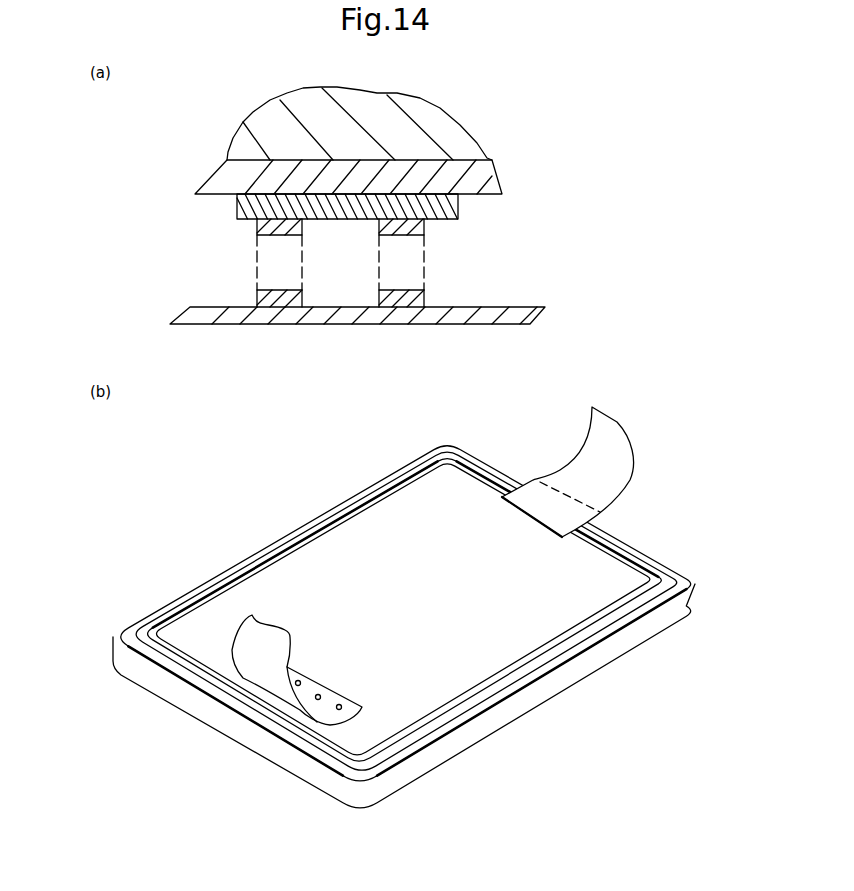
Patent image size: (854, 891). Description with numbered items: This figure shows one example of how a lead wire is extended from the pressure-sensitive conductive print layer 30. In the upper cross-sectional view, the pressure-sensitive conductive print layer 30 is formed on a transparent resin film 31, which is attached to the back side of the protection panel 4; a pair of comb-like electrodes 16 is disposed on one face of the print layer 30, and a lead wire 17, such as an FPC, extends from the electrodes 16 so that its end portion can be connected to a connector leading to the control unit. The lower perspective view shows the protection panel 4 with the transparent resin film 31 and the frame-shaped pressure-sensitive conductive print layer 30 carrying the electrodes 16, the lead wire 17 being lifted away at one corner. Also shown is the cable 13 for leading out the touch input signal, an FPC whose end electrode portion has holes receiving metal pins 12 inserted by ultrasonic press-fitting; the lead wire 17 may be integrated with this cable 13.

The protection panel 4 is at (268, 128).
The transparent resin film 31 is at (482, 182).
The pressure-sensitive conductive print layer 30 is at (448, 204).
The comb-like electrodes 16 is at (280, 238).
The lead wire 17 is at (483, 308).
The cable 13 is at (252, 643).
The metal pin 12 is at (341, 706).